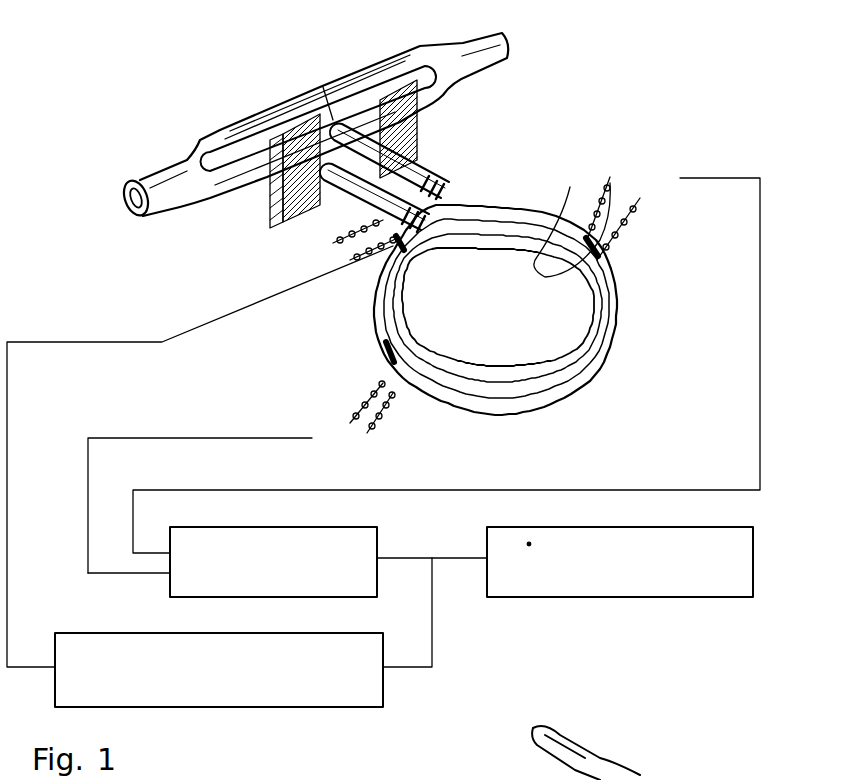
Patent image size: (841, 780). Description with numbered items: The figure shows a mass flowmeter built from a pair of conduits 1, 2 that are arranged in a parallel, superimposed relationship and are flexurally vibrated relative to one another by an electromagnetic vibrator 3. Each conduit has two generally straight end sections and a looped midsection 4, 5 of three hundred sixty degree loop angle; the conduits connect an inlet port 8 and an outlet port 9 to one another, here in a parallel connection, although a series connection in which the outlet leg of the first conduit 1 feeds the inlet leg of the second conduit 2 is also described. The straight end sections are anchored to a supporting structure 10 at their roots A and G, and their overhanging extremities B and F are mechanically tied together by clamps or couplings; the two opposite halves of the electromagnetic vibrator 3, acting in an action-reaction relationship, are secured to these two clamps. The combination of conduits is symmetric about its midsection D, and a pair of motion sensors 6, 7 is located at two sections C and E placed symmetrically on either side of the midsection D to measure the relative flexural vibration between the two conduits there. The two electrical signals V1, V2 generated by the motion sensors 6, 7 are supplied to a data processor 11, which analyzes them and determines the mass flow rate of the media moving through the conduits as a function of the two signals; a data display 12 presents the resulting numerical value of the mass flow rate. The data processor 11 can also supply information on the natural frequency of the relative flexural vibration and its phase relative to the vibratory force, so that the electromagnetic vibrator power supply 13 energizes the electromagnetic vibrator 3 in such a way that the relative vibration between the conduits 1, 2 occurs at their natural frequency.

The first conduit 1 is at (470, 375).
The second conduit 2 is at (522, 396).
The electromagnetic vibrator 3 is at (393, 247).
The looped midsection 4 is at (604, 281).
The looped midsection 5 is at (604, 338).
The motion sensor 6 is at (394, 384).
The motion sensor 7 is at (572, 221).
The inlet port 8 is at (135, 180).
The outlet port 9 is at (492, 28).
The supporting structure 10 is at (323, 87).
The data processor 11 is at (377, 540).
The data display 12 is at (555, 597).
The electromagnetic vibrator power supply 13 is at (350, 707).
The root A is at (270, 184).
The overhanging extremity B is at (209, 288).
The section C is at (383, 343).
The midsection D is at (583, 345).
The section E is at (600, 251).
The overhanging extremity F is at (223, 282).
The root G is at (400, 123).
The first sensor output voltage V1 is at (241, 477).
The second sensor output voltage V2 is at (446, 359).